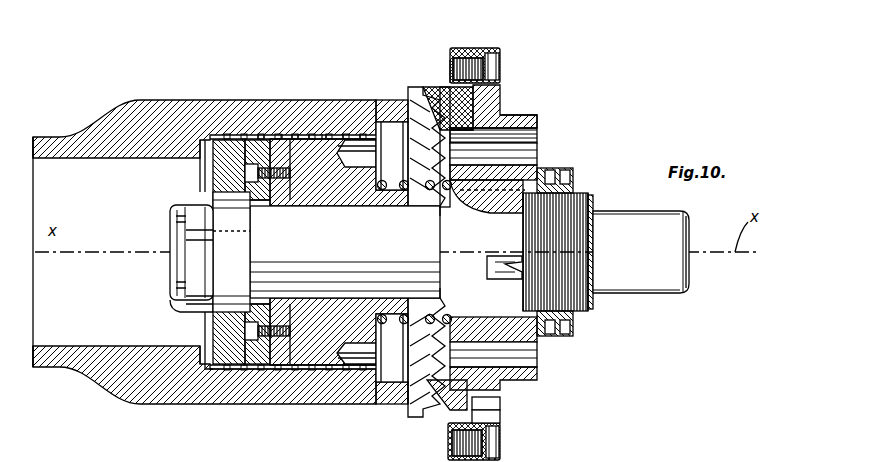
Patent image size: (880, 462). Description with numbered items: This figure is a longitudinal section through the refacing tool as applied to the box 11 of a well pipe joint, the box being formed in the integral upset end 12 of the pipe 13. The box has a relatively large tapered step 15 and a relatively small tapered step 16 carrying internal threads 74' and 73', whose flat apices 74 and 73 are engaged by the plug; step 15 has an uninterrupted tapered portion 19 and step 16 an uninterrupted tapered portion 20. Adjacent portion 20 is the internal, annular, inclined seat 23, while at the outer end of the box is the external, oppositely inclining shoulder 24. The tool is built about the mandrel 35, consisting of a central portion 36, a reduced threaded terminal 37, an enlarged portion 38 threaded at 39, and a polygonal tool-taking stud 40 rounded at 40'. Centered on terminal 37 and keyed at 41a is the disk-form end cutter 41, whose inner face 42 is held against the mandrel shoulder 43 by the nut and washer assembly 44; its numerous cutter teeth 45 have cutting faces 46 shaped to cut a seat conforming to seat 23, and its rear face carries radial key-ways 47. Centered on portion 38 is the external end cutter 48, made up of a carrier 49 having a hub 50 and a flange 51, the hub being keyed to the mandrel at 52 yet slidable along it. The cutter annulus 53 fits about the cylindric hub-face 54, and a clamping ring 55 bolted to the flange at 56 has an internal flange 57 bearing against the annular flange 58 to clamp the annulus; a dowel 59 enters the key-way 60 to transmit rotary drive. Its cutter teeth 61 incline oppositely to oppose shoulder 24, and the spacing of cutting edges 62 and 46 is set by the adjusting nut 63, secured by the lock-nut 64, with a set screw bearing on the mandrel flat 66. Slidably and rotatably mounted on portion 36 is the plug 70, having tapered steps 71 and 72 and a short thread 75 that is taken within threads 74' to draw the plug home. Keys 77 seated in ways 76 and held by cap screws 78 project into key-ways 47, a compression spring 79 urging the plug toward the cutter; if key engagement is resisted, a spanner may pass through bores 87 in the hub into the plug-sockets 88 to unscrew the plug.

The box 11 is at (245, 400).
The upset end 12 is at (135, 106).
The pipe 13 is at (52, 140).
The large tapered step 15 is at (360, 134).
The small tapered step 16 is at (235, 134).
The uninterrupted tapered portion 19 is at (390, 118).
The uninterrupted tapered portion 20 is at (205, 145).
The internal annular inclined seat 23 is at (205, 358).
The external annular shoulder 24 is at (425, 94).
The mandrel 35 is at (318, 308).
The central portion 36 is at (344, 252).
The threaded terminal 37 is at (193, 264).
The enlarged portion 38 is at (548, 222).
The thread 39 is at (575, 215).
The tool-taking stud 40 is at (641, 270).
The rounded end 40' is at (708, 252).
The end cutter 41 is at (225, 322).
The key 41a is at (190, 234).
The inner face 42 is at (252, 212).
The mandrel shoulder 43 is at (250, 234).
The nut and washer assembly 44 is at (186, 212).
The cutter teeth 45 is at (230, 368).
The cutting faces 46 is at (205, 160).
The key-ways 47 is at (200, 303).
The end cutter 48 is at (505, 115).
The carrier or head portion 49 is at (537, 122).
The hub 50 is at (537, 128).
The flange 51 is at (475, 418).
The key 52 is at (537, 172).
The cutter annulus 53 is at (470, 110).
The cylindric hub-face 54 is at (470, 140).
The clamping ring 55 is at (465, 50).
The bolt 56 is at (497, 52).
The internal flange 57 is at (458, 426).
The annular flange 58 is at (455, 75).
The dowel 59 is at (490, 402).
The key-way 60 is at (498, 440).
The cutter teeth 61 is at (412, 400).
The cutting edges 62 is at (410, 386).
The adjusting nut 63 is at (552, 172).
The lock-nut 64 is at (567, 172).
The mandrel flat 66 is at (502, 268).
The plug 70 is at (312, 140).
The tapered step 71 is at (300, 134).
The tapered step 72 is at (348, 134).
The thread apices 73 is at (303, 89).
The threads 73' is at (301, 80).
The thread apices 74 is at (346, 83).
The threads 74' is at (347, 74).
The short thread 75 is at (340, 370).
The ways 76 is at (262, 134).
The keys 77 is at (252, 134).
The cap screws 78 is at (280, 182).
The compression spring 79 is at (385, 192).
The bores 87 is at (515, 178).
The plug-sockets 88 is at (360, 161).